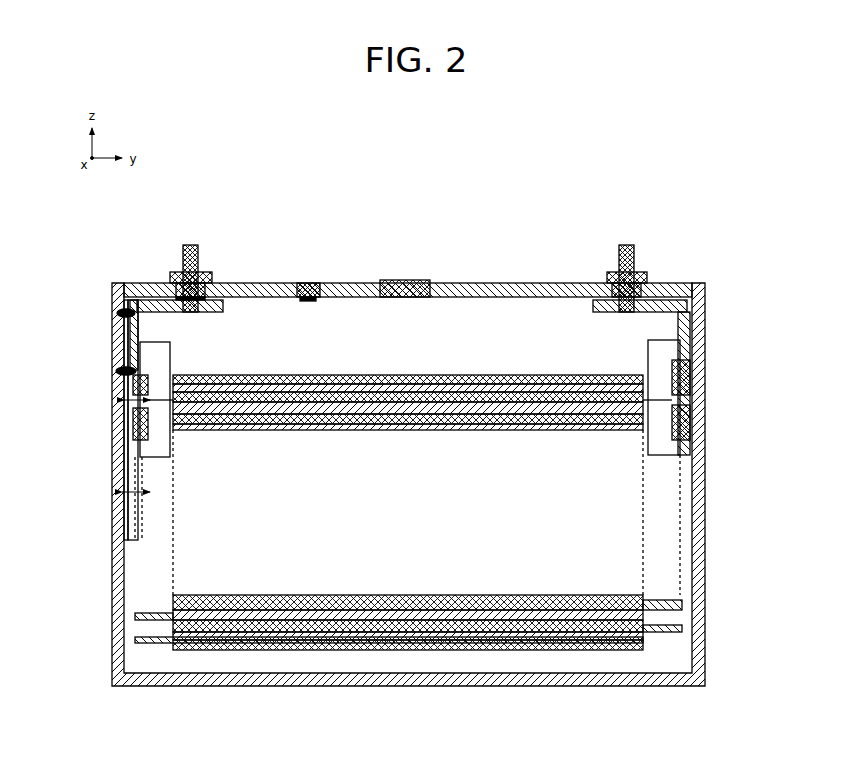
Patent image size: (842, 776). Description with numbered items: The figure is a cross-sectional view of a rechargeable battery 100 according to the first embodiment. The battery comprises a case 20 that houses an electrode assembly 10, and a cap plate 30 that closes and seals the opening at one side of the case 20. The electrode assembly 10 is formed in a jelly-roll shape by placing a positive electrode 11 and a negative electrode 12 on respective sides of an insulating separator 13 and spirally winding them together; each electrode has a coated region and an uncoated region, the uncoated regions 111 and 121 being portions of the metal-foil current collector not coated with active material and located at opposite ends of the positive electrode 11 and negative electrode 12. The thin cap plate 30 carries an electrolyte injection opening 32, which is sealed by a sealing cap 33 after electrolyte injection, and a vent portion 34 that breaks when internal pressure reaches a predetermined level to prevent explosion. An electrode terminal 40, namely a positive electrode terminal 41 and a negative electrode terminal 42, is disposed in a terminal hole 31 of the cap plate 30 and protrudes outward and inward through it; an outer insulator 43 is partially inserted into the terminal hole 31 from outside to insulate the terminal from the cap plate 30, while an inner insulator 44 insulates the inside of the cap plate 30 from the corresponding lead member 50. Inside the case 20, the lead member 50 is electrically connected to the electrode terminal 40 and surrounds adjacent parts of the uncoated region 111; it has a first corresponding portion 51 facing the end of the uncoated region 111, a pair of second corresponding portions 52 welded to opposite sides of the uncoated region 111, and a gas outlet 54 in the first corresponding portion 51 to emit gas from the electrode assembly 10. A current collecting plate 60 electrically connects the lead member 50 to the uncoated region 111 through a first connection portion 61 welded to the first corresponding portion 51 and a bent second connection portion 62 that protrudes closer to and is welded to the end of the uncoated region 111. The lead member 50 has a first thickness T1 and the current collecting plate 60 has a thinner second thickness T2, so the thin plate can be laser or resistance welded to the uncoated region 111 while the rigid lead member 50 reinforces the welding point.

The rechargeable battery 100 is at (404, 441).
The electrode assembly 10 is at (412, 540).
The positive electrode 11 is at (389, 686).
The uncoated region 111 is at (389, 686).
The negative electrode 12 is at (427, 678).
The uncoated region 121 is at (662, 680).
The separator 13 is at (408, 665).
The case 20 is at (431, 484).
The cap plate 30 is at (408, 269).
The terminal hole 31 is at (408, 259).
The electrolyte injection opening 32 is at (310, 318).
The sealing cap 33 is at (308, 269).
The vent portion 34 is at (405, 269).
The electrode terminal 40 is at (430, 325).
The positive electrode terminal 41 is at (191, 254).
The negative electrode terminal 42 is at (641, 325).
The outer insulator 43 is at (161, 264).
The inner insulator 44 is at (158, 282).
The lead member 50 is at (99, 420).
The first corresponding portion 51 is at (115, 421).
The second corresponding portion 52 is at (112, 498).
The gas outlet 54 is at (94, 420).
The current collecting plate 60 is at (98, 375).
The first connection portion 61 is at (104, 439).
The second connection portion 62 is at (104, 409).
The first thickness T1 is at (136, 505).
The second thickness T2 is at (111, 404).